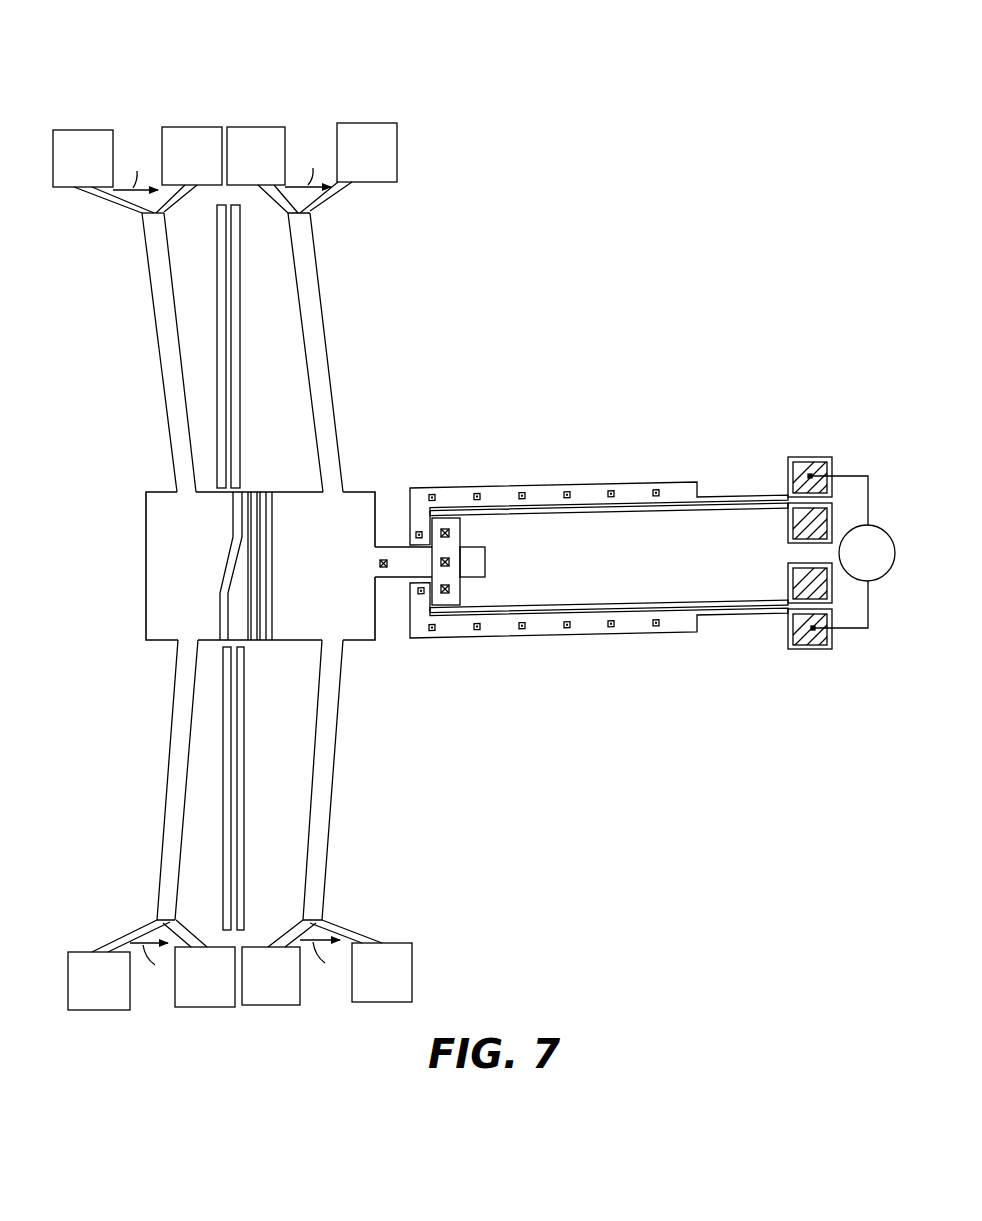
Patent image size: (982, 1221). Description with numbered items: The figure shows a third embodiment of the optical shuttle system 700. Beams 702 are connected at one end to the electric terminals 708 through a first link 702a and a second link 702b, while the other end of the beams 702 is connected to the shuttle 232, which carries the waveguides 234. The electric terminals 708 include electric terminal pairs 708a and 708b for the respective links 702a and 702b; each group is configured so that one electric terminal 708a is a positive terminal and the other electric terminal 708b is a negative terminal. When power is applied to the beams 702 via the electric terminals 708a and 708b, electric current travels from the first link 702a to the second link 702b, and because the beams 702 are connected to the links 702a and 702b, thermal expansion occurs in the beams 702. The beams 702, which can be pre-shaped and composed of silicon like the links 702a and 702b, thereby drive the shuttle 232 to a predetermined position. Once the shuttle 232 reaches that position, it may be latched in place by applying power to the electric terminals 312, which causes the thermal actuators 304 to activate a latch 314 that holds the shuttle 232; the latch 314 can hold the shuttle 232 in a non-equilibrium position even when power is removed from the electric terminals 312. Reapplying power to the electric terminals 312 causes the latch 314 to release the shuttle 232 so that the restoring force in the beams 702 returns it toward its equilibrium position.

The optical shuttle system 700 is at (597, 280).
The electric terminals 708 is at (192, 66).
The positive electric terminal 708a is at (73, 132).
The negative electric terminal 708b is at (184, 129).
The beams 702 is at (314, 293).
The first link 702a is at (131, 214).
The second link 702b is at (171, 222).
The shuttle 232 is at (373, 515).
The waveguides 234 is at (227, 577).
The thermal actuators 304 is at (542, 487).
The electric terminals 312 is at (805, 463).
The latch 314 is at (485, 560).